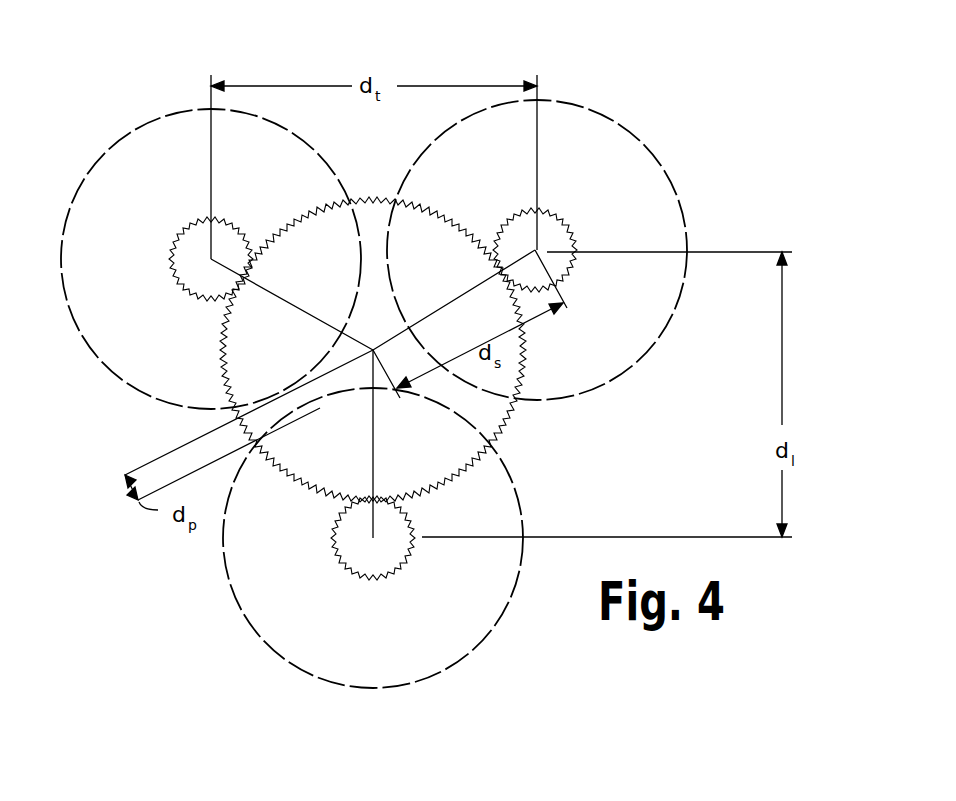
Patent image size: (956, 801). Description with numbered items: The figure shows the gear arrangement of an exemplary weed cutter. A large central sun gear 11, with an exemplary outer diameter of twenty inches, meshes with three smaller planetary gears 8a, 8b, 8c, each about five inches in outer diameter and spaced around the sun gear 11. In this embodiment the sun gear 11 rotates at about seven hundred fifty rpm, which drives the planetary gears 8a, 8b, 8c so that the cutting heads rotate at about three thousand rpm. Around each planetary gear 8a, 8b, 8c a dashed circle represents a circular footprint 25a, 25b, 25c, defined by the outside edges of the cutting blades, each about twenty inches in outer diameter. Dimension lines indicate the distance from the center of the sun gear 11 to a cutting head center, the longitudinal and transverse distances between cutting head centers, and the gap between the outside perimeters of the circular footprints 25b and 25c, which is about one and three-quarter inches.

The sun gear 11 is at (386, 336).
The planetary gear 8a is at (551, 236).
The planetary gear 8b is at (350, 543).
The planetary gear 8c is at (192, 238).
The circular footprint 25a is at (613, 127).
The circular footprint 25b is at (230, 586).
The circular footprint 25c is at (118, 140).